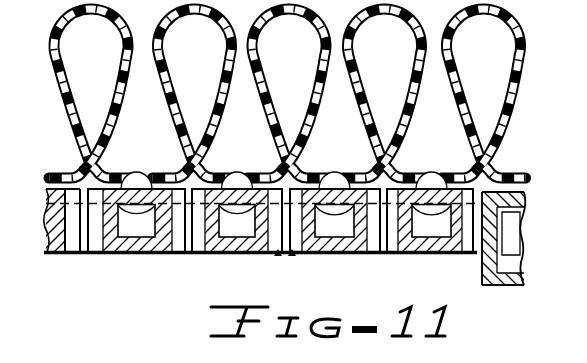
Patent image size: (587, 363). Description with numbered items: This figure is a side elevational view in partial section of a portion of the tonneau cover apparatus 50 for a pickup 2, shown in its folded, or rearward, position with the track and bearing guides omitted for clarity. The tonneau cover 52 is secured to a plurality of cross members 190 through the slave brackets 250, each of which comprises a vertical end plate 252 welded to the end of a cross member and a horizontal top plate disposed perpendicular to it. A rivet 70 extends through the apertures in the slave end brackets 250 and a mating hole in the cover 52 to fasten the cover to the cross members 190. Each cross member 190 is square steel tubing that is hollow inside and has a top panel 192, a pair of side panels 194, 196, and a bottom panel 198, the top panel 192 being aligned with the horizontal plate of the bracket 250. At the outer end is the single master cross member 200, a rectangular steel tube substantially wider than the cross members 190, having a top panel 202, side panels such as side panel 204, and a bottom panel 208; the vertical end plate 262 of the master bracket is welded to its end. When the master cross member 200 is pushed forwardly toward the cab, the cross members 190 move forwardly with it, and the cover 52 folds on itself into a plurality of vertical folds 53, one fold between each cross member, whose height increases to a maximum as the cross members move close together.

The pickup 2 is at (42, 362).
The tonneau cover apparatus 50 is at (502, 93).
The tonneau cover 52 is at (517, 108).
The folds 53 is at (253, 92).
The rivet 70 is at (147, 172).
The cross members 190 is at (229, 264).
The top panel 192 is at (420, 200).
The side panel 194 is at (321, 250).
The side panel 196 is at (467, 236).
The bottom panel 198 is at (293, 223).
The master cross member 200 is at (486, 246).
The top panel 202 is at (513, 200).
The side panel 204 is at (482, 268).
The bottom panel 208 is at (522, 282).
The slave brackets 250 is at (283, 257).
The vertical end plate 252 is at (96, 255).
The vertical end plate 262 is at (514, 262).